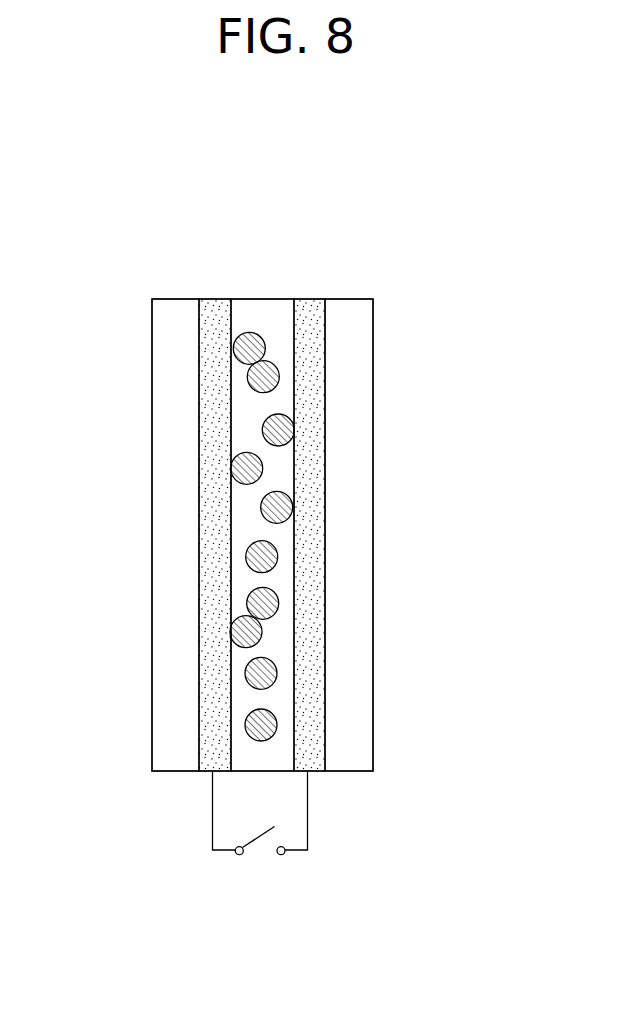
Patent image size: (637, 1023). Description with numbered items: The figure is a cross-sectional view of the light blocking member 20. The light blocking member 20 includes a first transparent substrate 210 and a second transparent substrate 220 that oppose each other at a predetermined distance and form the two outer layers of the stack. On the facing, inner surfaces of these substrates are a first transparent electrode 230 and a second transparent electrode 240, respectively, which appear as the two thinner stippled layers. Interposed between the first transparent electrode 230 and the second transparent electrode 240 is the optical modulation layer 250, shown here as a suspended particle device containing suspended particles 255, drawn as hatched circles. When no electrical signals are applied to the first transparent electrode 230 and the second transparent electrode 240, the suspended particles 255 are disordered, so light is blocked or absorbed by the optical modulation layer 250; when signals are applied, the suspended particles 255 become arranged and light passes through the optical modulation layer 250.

The light blocking member 20 is at (279, 156).
The first transparent substrate 210 is at (167, 556).
The second transparent substrate 220 is at (358, 557).
The first transparent electrode 230 is at (213, 310).
The second transparent electrode 240 is at (311, 310).
The optical modulation layer 250 is at (262, 310).
The suspended particles 255 is at (242, 472).